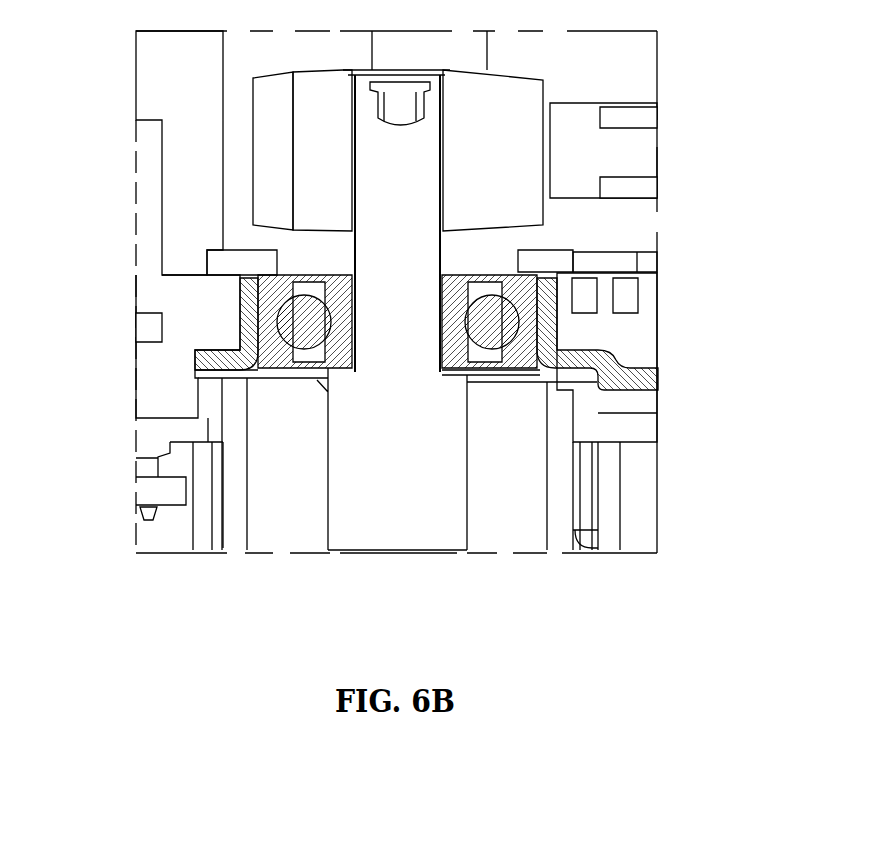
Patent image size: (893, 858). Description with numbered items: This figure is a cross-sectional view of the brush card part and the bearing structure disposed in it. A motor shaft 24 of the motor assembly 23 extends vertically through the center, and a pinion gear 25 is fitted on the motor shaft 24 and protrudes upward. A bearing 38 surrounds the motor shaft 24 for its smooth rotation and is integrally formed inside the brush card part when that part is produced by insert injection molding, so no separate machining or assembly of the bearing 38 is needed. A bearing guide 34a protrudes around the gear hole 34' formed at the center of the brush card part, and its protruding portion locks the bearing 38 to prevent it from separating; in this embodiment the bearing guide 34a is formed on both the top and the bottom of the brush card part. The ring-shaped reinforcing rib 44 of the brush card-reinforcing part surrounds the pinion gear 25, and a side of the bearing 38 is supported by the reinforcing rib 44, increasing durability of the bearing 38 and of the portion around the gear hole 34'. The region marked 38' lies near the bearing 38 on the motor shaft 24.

The motor assembly 23 is at (514, 541).
The motor shaft 24 is at (420, 168).
The pinion gear 25 is at (525, 92).
The gear hole 34' is at (396, 252).
The bearing guide 34a is at (235, 262).
The bearing 38 is at (392, 332).
The bearing seat 38' is at (396, 471).
The reinforcing rib 44 is at (250, 320).